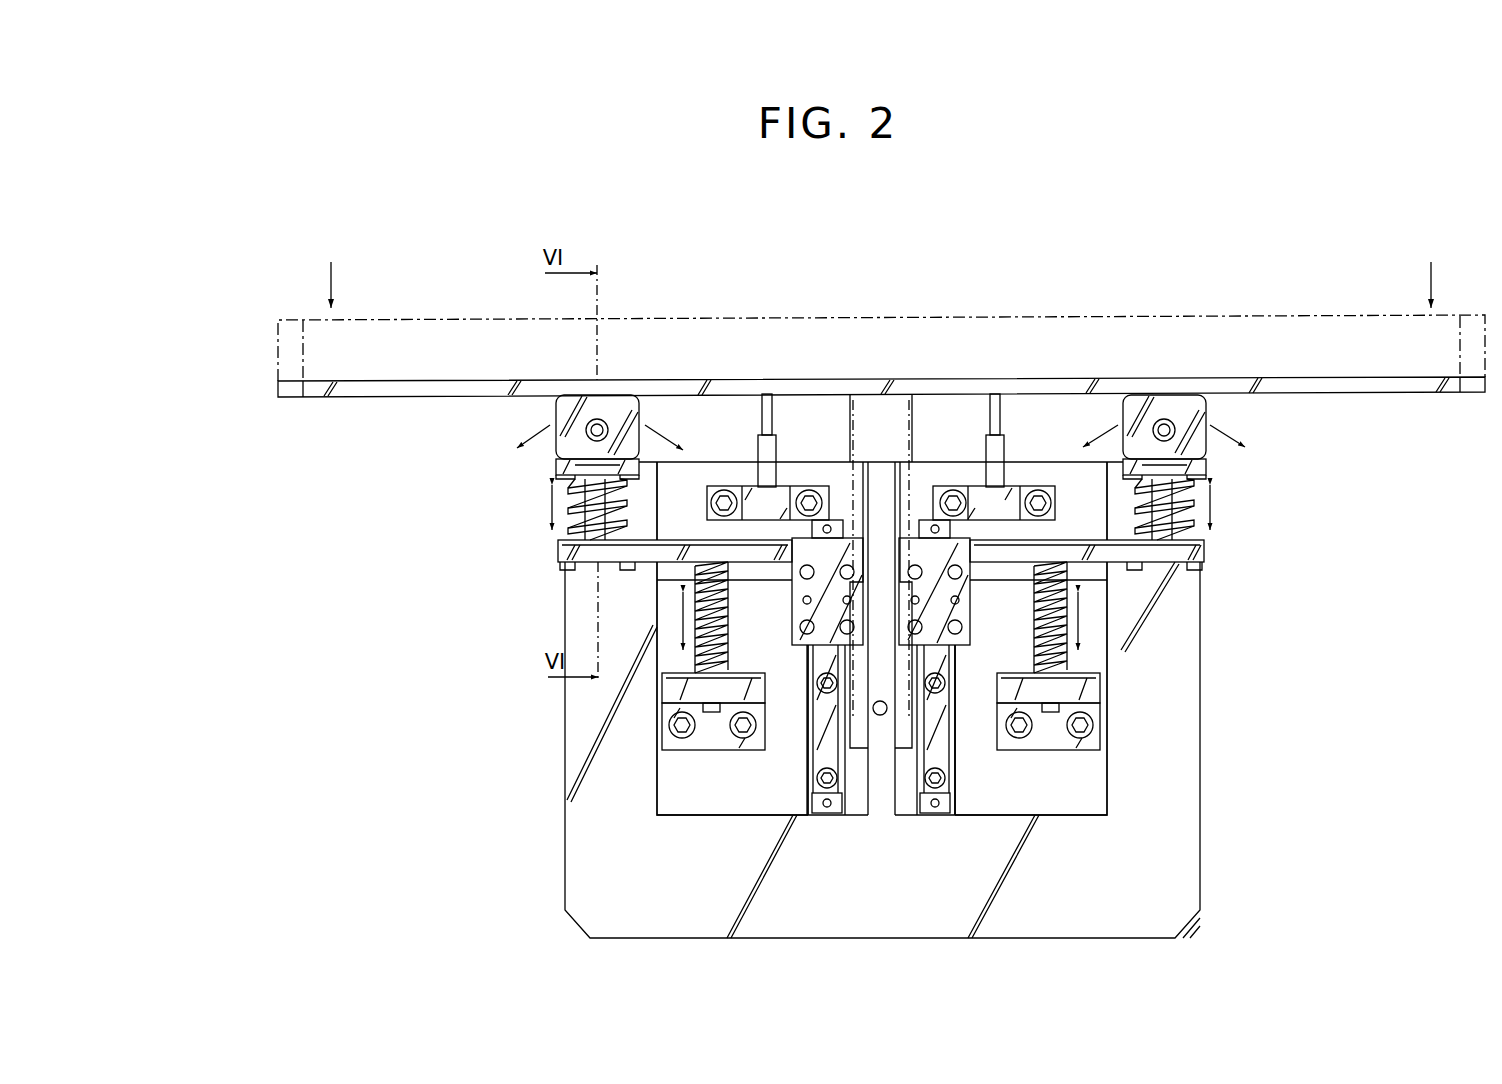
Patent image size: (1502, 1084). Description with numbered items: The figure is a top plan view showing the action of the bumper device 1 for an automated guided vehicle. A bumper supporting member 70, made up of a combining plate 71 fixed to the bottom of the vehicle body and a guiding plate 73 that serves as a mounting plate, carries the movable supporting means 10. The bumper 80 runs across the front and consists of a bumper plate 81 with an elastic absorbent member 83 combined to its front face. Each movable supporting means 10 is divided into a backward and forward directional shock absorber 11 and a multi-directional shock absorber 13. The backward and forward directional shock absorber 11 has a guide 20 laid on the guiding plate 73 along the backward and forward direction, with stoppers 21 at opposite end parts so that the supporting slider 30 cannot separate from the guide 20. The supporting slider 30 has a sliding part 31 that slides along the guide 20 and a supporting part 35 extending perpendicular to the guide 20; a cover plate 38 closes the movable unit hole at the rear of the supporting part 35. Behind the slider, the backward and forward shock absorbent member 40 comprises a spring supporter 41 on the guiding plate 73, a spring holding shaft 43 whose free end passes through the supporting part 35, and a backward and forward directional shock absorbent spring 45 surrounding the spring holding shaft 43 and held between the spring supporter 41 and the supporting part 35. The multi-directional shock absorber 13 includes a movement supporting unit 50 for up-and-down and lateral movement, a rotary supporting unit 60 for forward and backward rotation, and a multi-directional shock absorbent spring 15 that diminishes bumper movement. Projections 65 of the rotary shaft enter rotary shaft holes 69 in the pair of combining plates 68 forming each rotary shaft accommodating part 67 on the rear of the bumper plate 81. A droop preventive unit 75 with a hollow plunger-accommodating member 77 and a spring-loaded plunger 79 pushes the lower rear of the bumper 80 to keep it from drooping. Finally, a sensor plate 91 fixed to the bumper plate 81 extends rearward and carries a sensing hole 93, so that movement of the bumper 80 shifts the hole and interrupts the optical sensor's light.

The bumper device 1 is at (1393, 223).
The movable supporting means 10 is at (1379, 487).
The backward and forward directional shock absorber 11 is at (1332, 583).
The multi-directional shock absorber 13 is at (1332, 447).
The multi-directional shock absorbent spring 15 is at (1208, 517).
The guide 20 is at (953, 765).
The stopper 21 is at (924, 505).
The supporting slider 30 is at (1285, 548).
The sliding part 31 is at (968, 605).
The supporting part 35 is at (1204, 550).
The cover plate 38 is at (603, 568).
The backward and forward shock absorbent member 40 is at (1285, 656).
The spring supporter 41 is at (1103, 735).
The spring holding shaft 43 is at (1103, 690).
The backward and forward directional shock absorbent spring 45 is at (1068, 650).
The movement supporting unit 50 is at (1206, 492).
The rotary supporting unit 60 is at (1212, 437).
The projection 65 is at (1158, 417).
The rotary shaft accommodating part 67 is at (1107, 246).
The combining plate 68 is at (1188, 402).
The rotary shaft hole 69 is at (1162, 410).
The bumper supporting member 70 is at (482, 790).
The combining plate 71 is at (565, 880).
The guiding plate 73 is at (672, 787).
The droop preventive unit 75 is at (815, 246).
The plunger-accommodating member 77 is at (760, 413).
The plunger 79 is at (777, 438).
The bumper 80 is at (191, 330).
The bumper plate 81 is at (276, 392).
The elastic absorbent member 83 is at (276, 330).
The sensor plate 91 is at (878, 407).
The sensing hole 93 is at (880, 715).